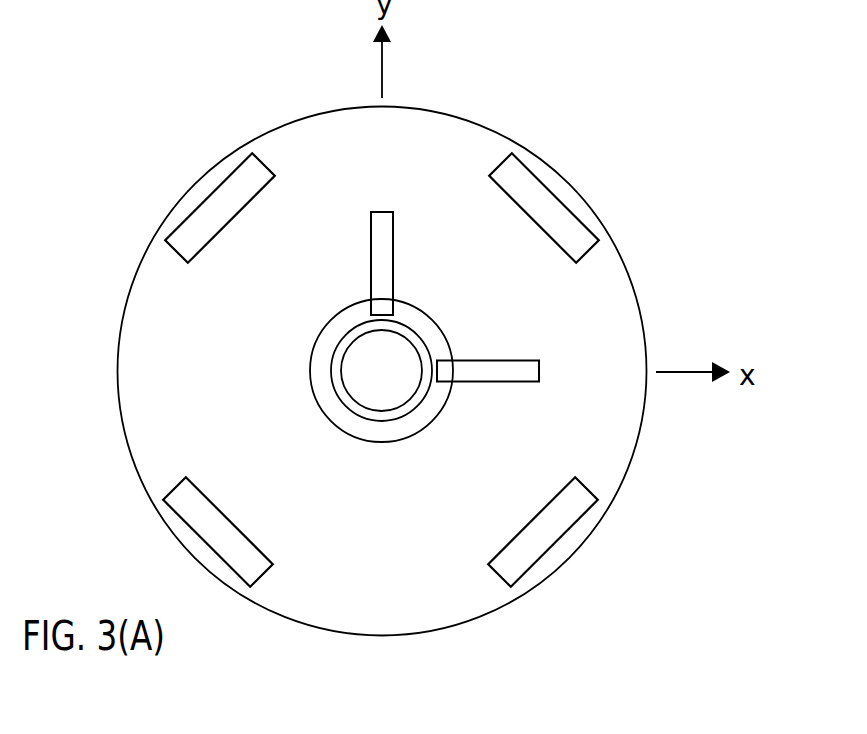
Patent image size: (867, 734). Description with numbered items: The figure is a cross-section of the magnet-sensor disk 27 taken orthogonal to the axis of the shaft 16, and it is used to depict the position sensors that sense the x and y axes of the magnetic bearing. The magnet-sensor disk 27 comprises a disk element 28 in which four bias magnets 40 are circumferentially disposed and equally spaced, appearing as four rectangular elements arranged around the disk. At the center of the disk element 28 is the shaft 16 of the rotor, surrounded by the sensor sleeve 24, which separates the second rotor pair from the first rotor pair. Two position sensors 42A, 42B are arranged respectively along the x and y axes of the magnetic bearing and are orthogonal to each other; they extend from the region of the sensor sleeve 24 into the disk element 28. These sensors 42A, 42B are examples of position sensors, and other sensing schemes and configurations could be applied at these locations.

The shaft 16 is at (377, 378).
The sensor sleeve 24 is at (343, 340).
The magnet-sensor disk 27 is at (232, 118).
The disk element 28 is at (430, 130).
The bias magnets 40 is at (212, 208).
The position sensor 42A is at (383, 229).
The position sensor 42B is at (522, 365).